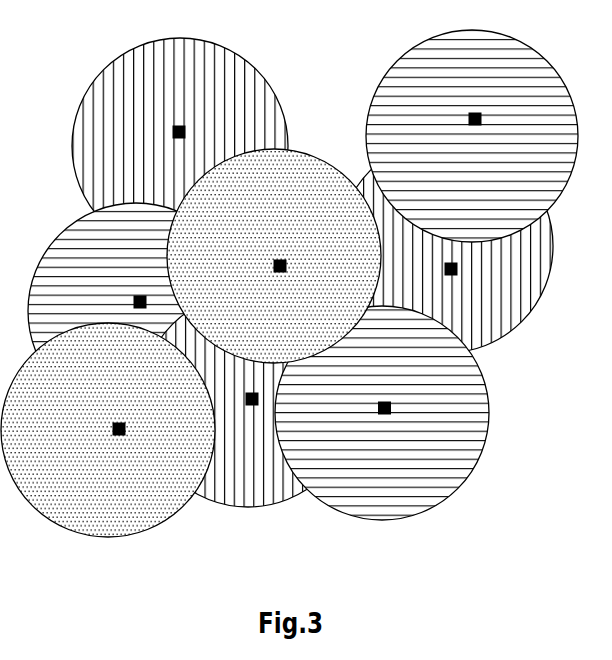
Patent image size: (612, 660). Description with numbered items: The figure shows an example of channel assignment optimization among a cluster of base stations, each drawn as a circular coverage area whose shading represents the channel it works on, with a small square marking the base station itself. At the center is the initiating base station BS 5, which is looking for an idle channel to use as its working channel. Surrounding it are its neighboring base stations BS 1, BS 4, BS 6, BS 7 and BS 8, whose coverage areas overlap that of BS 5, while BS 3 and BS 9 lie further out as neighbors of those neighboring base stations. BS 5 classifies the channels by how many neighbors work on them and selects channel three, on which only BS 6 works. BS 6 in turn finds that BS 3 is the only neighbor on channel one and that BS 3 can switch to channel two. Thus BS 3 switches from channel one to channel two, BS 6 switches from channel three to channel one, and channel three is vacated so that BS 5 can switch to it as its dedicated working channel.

The BS 1 is at (180, 146).
The BS 3 is at (472, 136).
The BS 4 is at (136, 311).
The BS 5 is at (274, 256).
The BS 6 is at (446, 246).
The BS 7 is at (248, 400).
The BS 8 is at (382, 413).
The BS 9 is at (108, 430).